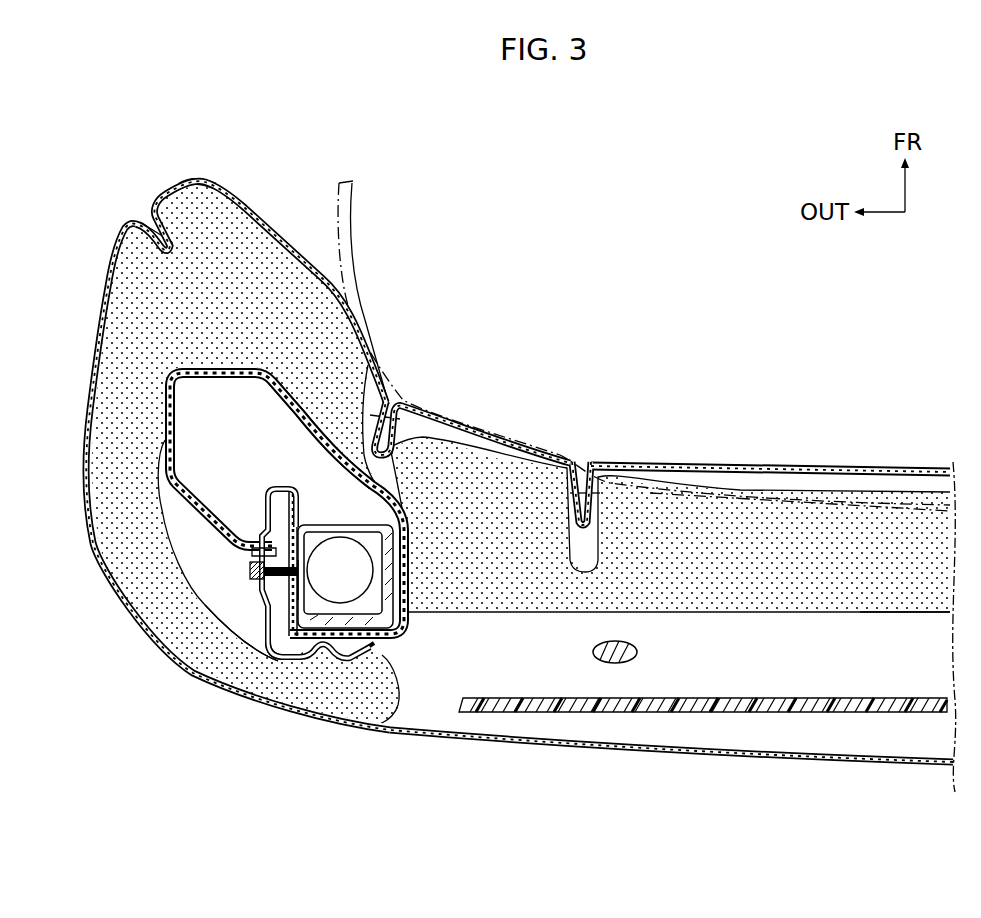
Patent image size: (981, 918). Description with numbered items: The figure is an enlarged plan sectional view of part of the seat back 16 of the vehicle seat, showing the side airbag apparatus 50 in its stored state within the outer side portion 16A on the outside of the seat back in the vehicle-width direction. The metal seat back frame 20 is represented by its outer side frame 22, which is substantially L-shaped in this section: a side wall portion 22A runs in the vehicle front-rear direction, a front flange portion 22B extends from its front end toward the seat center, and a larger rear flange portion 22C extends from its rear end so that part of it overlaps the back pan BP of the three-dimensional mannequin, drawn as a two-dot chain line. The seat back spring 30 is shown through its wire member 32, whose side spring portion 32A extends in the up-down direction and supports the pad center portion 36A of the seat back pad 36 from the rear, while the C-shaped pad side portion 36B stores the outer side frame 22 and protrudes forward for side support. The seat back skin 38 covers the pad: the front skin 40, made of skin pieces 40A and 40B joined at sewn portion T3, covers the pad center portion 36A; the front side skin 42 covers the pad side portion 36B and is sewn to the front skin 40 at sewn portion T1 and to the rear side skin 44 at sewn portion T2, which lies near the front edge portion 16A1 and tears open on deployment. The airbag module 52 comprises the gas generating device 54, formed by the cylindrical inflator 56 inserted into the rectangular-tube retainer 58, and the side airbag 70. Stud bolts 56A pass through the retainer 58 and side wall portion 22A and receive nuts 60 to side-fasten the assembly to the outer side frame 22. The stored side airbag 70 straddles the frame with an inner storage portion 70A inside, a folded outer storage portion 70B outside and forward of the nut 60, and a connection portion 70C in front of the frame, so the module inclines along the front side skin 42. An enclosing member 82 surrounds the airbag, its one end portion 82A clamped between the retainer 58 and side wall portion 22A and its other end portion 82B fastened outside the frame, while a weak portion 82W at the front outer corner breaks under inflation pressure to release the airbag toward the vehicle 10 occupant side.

The vehicle 10 is at (520, 468).
The seat back 16 is at (520, 468).
The outer side portion 16A is at (260, 264).
The front edge portion 16A1 is at (196, 179).
The seat back frame 20 is at (311, 598).
The outer side frame 22 is at (311, 598).
The side wall portion 22A is at (272, 658).
The front flange portion 22B is at (278, 488).
The rear flange portion 22C is at (380, 708).
The seat back spring 30 is at (703, 673).
The wire member 32 is at (703, 673).
The side spring portion 32A is at (640, 651).
The seat back pad 36 is at (634, 460).
The pad center portion 36A is at (873, 600).
The pad side portion 36B is at (318, 282).
The seat back skin 38 is at (608, 746).
The front skin 40 is at (676, 449).
The skin piece 40A is at (785, 462).
The skin piece 40B is at (528, 440).
The front side skin 42 is at (292, 246).
The rear side skin 44 is at (199, 678).
The side airbag apparatus 50 is at (134, 516).
The airbag module 52 is at (194, 523).
The gas generating device 54 is at (335, 511).
The inflator 56 is at (271, 609).
The stud bolt 56A is at (265, 556).
The retainer 58 is at (392, 597).
The nut 60 is at (254, 571).
The side airbag 70 is at (286, 472).
The inner storage portion 70A is at (410, 563).
The outer storage portion 70B is at (166, 412).
The connection portion 70C is at (340, 392).
The enclosing member 82 is at (217, 476).
The one end portion 82A is at (287, 665).
The other end portion 82B is at (191, 650).
The weak portion 82W is at (170, 367).
The back pan BP is at (354, 214).
The sewn portion T1 is at (402, 404).
The sewn portion T2 is at (130, 221).
The sewn portion T3 is at (596, 462).